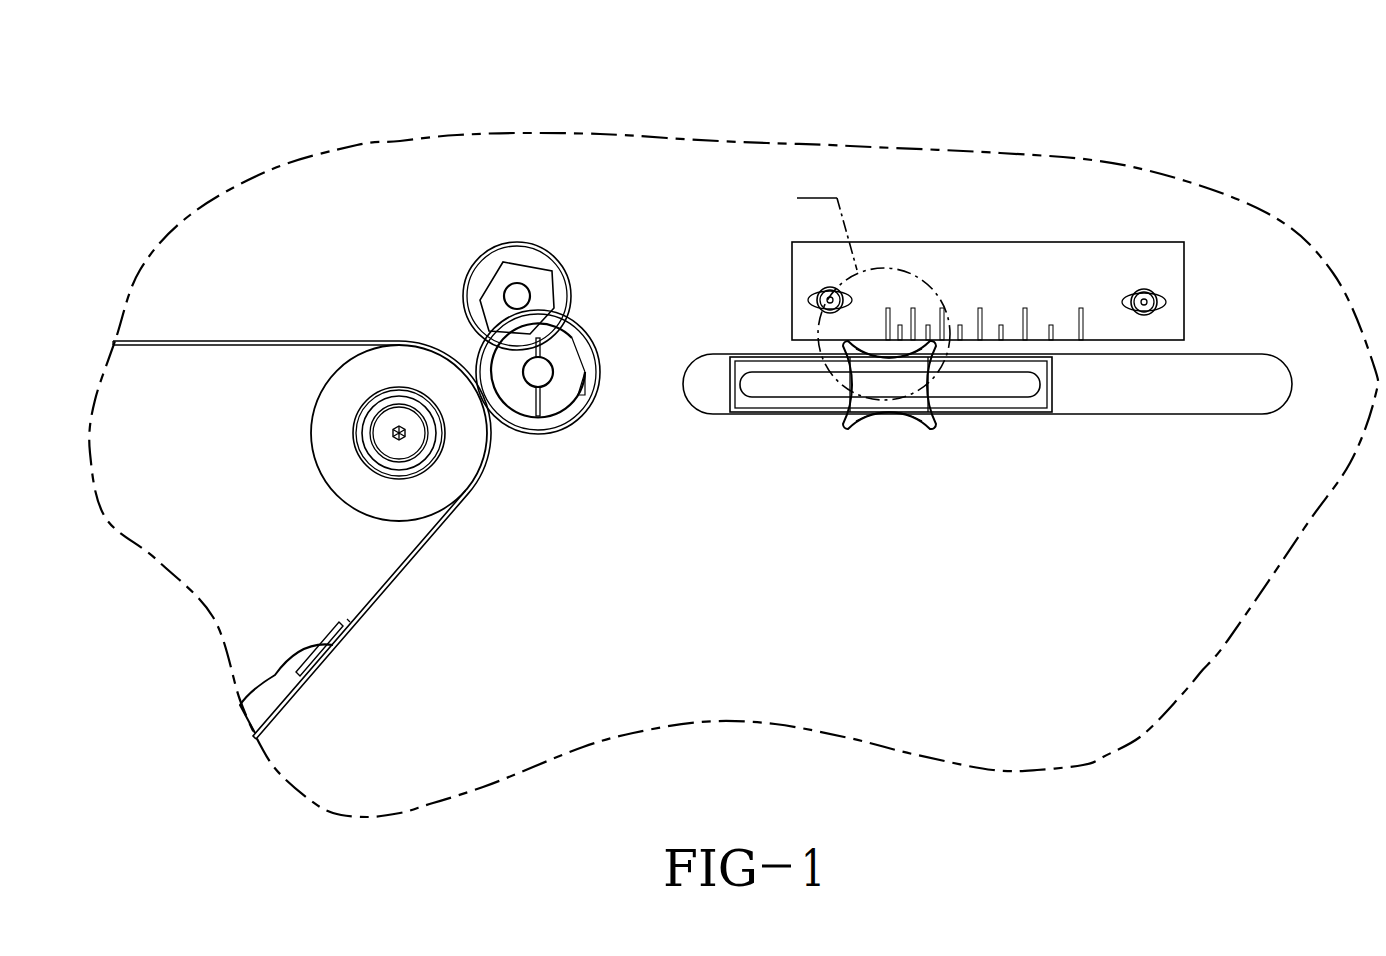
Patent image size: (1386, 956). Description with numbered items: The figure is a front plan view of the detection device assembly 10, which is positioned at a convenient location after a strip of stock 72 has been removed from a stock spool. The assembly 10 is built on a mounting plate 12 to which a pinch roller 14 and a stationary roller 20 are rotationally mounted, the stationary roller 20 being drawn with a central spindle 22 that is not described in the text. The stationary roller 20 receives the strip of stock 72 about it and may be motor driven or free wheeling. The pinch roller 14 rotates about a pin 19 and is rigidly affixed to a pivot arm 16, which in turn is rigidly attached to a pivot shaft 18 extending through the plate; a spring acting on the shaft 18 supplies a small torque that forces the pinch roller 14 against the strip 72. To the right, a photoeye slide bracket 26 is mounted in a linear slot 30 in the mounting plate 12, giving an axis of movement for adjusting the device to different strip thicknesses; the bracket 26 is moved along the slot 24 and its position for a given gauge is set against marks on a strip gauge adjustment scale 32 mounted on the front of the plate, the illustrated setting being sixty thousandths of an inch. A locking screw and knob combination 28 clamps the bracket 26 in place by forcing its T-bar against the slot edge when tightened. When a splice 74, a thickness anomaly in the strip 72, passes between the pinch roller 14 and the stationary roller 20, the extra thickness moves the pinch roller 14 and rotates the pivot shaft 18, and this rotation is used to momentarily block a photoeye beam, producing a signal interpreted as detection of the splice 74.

The detection device assembly 10 is at (366, 102).
The mounting plate 12 is at (265, 248).
The pinch roller 14 is at (590, 330).
The pivot arm 16 is at (540, 296).
The pivot shaft 18 is at (513, 296).
The pin 19 is at (533, 372).
The stationary roller 20 is at (313, 457).
The reel spindle 22 is at (397, 435).
The slot 24 is at (1133, 415).
The photoeye slide bracket 26 is at (1010, 402).
The locking screw and knob combination 28 is at (870, 408).
The linear slot 30 is at (982, 383).
The strip gauge adjustment scale 32 is at (1000, 293).
The strip of stock 72 is at (287, 708).
The splice 74 is at (240, 702).